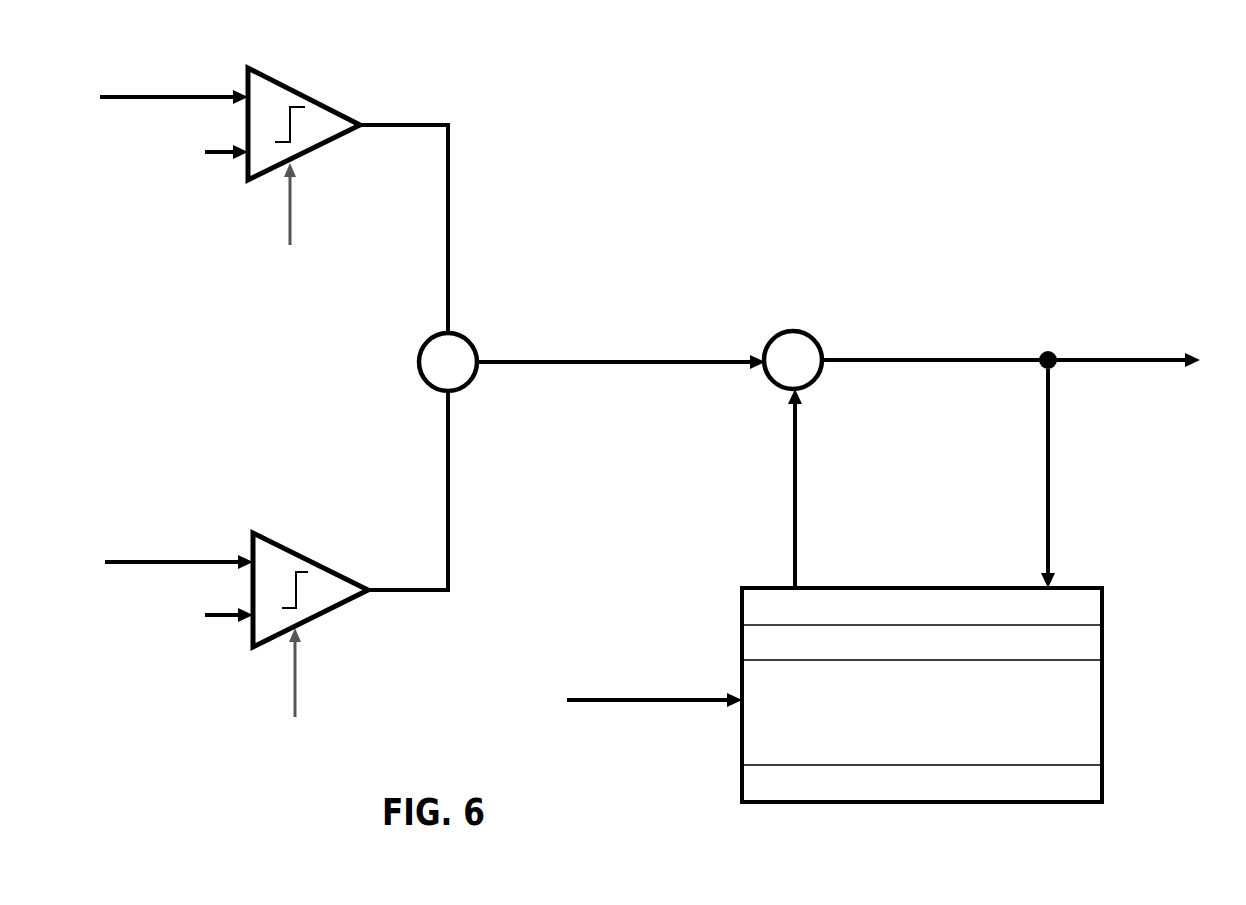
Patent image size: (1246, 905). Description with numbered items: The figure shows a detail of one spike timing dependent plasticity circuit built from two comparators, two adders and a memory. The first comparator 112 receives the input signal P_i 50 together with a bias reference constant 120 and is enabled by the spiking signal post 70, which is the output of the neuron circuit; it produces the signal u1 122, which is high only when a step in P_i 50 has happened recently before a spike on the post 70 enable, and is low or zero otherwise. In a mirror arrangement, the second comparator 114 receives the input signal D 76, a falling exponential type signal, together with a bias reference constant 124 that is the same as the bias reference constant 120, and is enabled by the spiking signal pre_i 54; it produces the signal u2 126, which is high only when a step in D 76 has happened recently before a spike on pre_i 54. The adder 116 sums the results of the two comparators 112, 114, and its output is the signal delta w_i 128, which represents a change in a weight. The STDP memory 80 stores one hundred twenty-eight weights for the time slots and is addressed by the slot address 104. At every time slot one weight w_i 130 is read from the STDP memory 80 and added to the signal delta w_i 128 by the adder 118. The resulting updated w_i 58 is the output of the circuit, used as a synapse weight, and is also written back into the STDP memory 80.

The P_i signal 50 is at (165, 92).
The first comparator 112 is at (330, 120).
The bias reference constant 120 is at (215, 157).
The post signal 70 is at (288, 220).
The signal u1 122 is at (450, 173).
The adder 116 is at (453, 340).
The delta w_i signal 128 is at (523, 357).
The adder 118 is at (812, 355).
The w_i signal 58 is at (1097, 358).
The weight w_i read from STDP memory 130 is at (798, 517).
The STDP memory 80 is at (1080, 710).
The slot address 104 is at (632, 703).
The D signal 76 is at (187, 558).
The second comparator 114 is at (288, 550).
The bias reference constant 124 is at (213, 622).
The pre_i signal 54 is at (290, 697).
The signal u2 126 is at (452, 513).